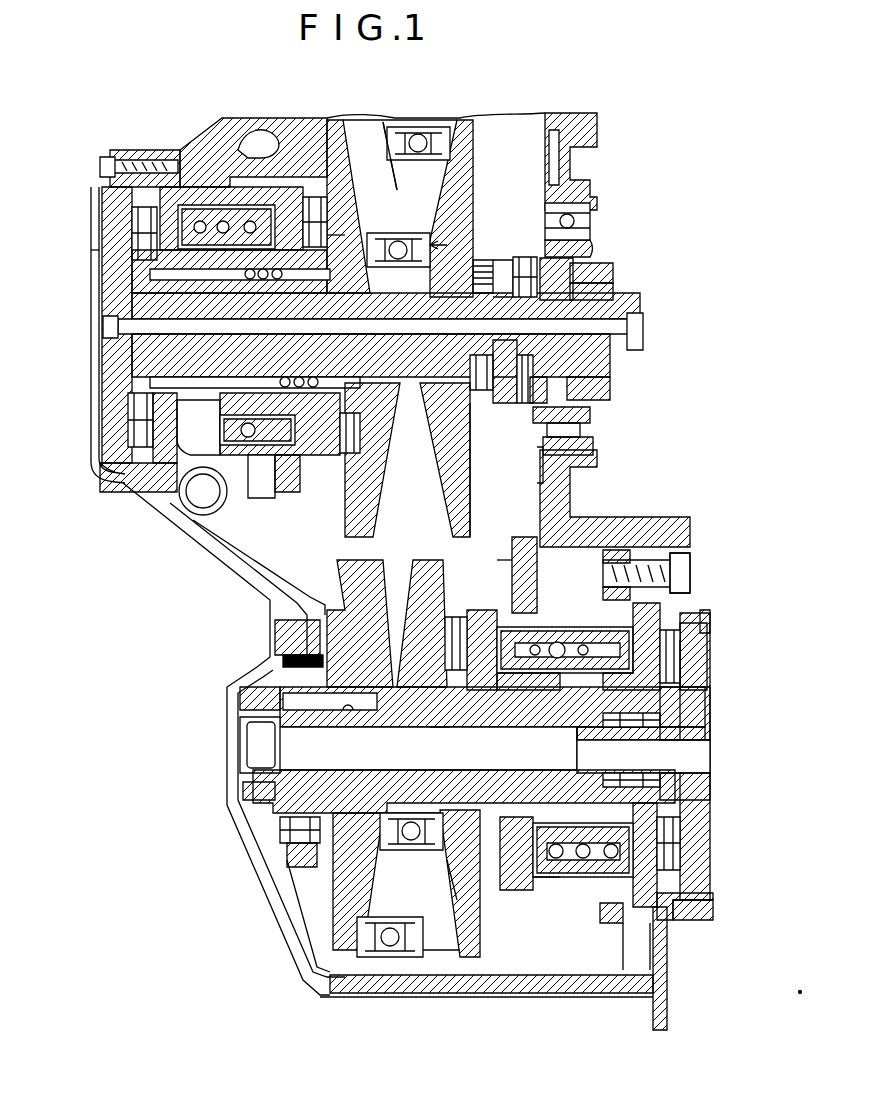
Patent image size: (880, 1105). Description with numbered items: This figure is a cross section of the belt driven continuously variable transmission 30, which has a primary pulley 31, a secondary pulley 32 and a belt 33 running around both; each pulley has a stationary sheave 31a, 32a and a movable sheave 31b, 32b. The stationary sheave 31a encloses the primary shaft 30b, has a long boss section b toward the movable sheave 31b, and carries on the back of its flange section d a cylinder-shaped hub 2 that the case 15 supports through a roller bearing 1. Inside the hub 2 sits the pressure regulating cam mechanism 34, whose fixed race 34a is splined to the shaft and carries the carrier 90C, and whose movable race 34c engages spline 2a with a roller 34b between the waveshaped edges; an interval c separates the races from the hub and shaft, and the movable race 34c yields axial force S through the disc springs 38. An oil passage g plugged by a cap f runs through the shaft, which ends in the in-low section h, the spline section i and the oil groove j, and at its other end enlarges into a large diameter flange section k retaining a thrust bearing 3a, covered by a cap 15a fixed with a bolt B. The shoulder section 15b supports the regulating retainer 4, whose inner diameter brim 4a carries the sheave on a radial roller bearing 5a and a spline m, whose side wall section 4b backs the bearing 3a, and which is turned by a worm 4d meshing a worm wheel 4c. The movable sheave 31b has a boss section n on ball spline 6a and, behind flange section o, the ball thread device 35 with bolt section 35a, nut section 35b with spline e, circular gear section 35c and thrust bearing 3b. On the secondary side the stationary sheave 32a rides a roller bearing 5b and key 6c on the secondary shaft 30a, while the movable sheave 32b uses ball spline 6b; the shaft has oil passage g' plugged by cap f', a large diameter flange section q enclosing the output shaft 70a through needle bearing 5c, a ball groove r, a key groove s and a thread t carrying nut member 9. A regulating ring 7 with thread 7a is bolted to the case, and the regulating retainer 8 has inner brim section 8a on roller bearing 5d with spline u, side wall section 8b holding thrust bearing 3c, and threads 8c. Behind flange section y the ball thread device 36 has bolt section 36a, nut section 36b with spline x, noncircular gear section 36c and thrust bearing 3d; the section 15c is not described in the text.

The belt driven continuously variable transmission 30 is at (181, 100).
The ball thread device 35 is at (233, 170).
The bolt B is at (100, 165).
The primary pulley 31 is at (357, 108).
The movable sheave 31b is at (333, 124).
The stationary sheave 31a is at (467, 153).
The flange section d is at (437, 173).
The flange section o is at (347, 177).
The spline e is at (258, 210).
The thrust bearing 3b is at (315, 215).
The thrust bearing 3a is at (143, 227).
The boss section n is at (323, 237).
The radial roller bearing 5a is at (158, 268).
The ball spline 6a is at (270, 280).
The disc springs 38 is at (452, 300).
The primary shaft 30b is at (610, 308).
The cap f is at (81, 330).
The in-low section h is at (637, 317).
The oil passage g is at (371, 355).
The boss section b is at (315, 348).
The oil groove j is at (355, 349).
The spline m is at (193, 407).
The pressure regulating cam mechanism 34 is at (529, 250).
The roller 34b is at (486, 262).
The interval c is at (553, 260).
The spline 2a is at (470, 270).
The spline section i is at (531, 370).
The carrier 90C is at (593, 267).
The fixed race 34a is at (610, 385).
The case 15 is at (567, 182).
The roller bearing 1 is at (578, 210).
The large diameter flange section k is at (140, 225).
The axial force S is at (444, 250).
The hub 2 is at (497, 393).
The movable race 34c is at (497, 395).
The cap 15a is at (128, 418).
The inner diameter brim 4a is at (142, 455).
The side wall section 4b is at (127, 468).
The regulating retainer 4 is at (227, 477).
The worm wheel 4c is at (177, 497).
The worm 4d is at (207, 500).
The shoulder section 15b is at (165, 475).
The bolt section 35a is at (280, 483).
The nut section 35b is at (270, 495).
The circular gear section 35c is at (300, 498).
The noncircular gear section 36c is at (513, 573).
The spline x is at (510, 625).
The inner brim section 8a is at (603, 680).
The thrust bearing 3d is at (430, 620).
The nut member 9 is at (275, 640).
The secondary shaft 30a is at (245, 698).
The key 6c is at (303, 707).
The key groove s is at (350, 710).
The output shaft 70a is at (688, 742).
The ball groove r is at (480, 793).
The oil passage g' is at (435, 746).
The cap f' is at (234, 745).
The needle bearing 5c is at (680, 777).
The roller bearing 5d is at (665, 722).
The spline u is at (657, 690).
The thread t is at (253, 790).
The roller bearing 5b is at (315, 850).
The secondary pulley 32 is at (451, 950).
The stationary sheave 32a is at (353, 923).
The movable sheave 32b is at (473, 937).
The belt 33 is at (428, 848).
The flange section y is at (470, 895).
The ball thread device 36 is at (581, 898).
The ball spline 6b is at (520, 810).
The bolt section 36a is at (548, 877).
The thrust bearing 3c is at (680, 843).
The boss 15c is at (620, 915).
The nut section 36b is at (697, 887).
The regulating ring 7 is at (605, 563).
The thread 7a is at (610, 590).
The regulating retainer 8 is at (618, 622).
The threads 8c is at (690, 572).
The side wall section 8b is at (693, 637).
The large diameter flange section q is at (687, 655).